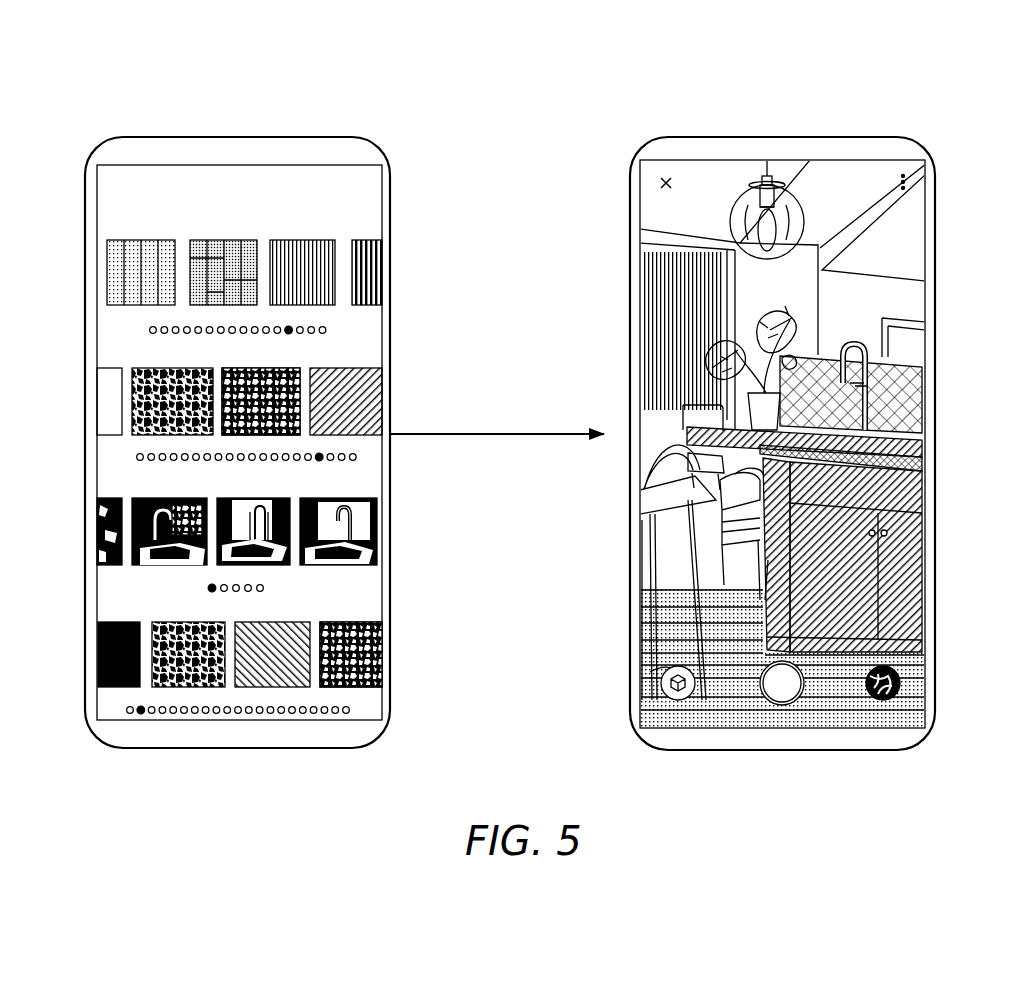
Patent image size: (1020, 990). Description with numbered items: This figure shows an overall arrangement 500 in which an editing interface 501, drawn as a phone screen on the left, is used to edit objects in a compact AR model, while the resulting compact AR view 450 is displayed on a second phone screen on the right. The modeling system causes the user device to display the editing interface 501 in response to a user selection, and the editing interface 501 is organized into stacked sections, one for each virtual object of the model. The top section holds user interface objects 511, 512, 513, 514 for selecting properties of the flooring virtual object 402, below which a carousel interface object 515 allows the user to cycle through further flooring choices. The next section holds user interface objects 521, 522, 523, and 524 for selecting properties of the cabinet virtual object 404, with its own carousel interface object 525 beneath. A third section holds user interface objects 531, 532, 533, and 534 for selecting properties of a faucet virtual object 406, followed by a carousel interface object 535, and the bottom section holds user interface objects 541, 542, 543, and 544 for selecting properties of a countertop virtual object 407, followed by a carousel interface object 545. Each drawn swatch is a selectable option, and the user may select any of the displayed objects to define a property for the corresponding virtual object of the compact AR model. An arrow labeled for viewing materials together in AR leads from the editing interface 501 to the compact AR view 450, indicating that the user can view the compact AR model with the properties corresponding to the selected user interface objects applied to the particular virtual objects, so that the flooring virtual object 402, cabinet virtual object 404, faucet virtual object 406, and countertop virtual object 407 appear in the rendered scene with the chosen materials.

The user interface flow 500 is at (82, 69).
The editing interface 501 is at (180, 158).
The compact AR view 450 is at (722, 158).
The flooring virtual object 402 is at (310, 228).
The cabinet virtual object 404 is at (310, 361).
The faucet virtual object 406 is at (307, 488).
The countertop virtual object 407 is at (325, 618).
The user interface object 511 is at (140, 280).
The user interface object 512 is at (190, 240).
The user interface object 513 is at (300, 258).
The user interface object 514 is at (357, 280).
The carousel interface object 515 is at (332, 330).
The user interface object 521 is at (106, 380).
The user interface object 522 is at (172, 410).
The user interface object 523 is at (272, 392).
The user interface object 524 is at (357, 415).
The carousel interface object 525 is at (142, 457).
The user interface object 531 is at (102, 530).
The user interface object 532 is at (167, 550).
The user interface object 533 is at (277, 507).
The user interface object 534 is at (357, 553).
The carousel interface object 535 is at (267, 588).
The user interface object 541 is at (117, 650).
The user interface object 542 is at (172, 672).
The user interface object 543 is at (267, 637).
The user interface object 544 is at (357, 677).
The carousel interface object 545 is at (127, 710).